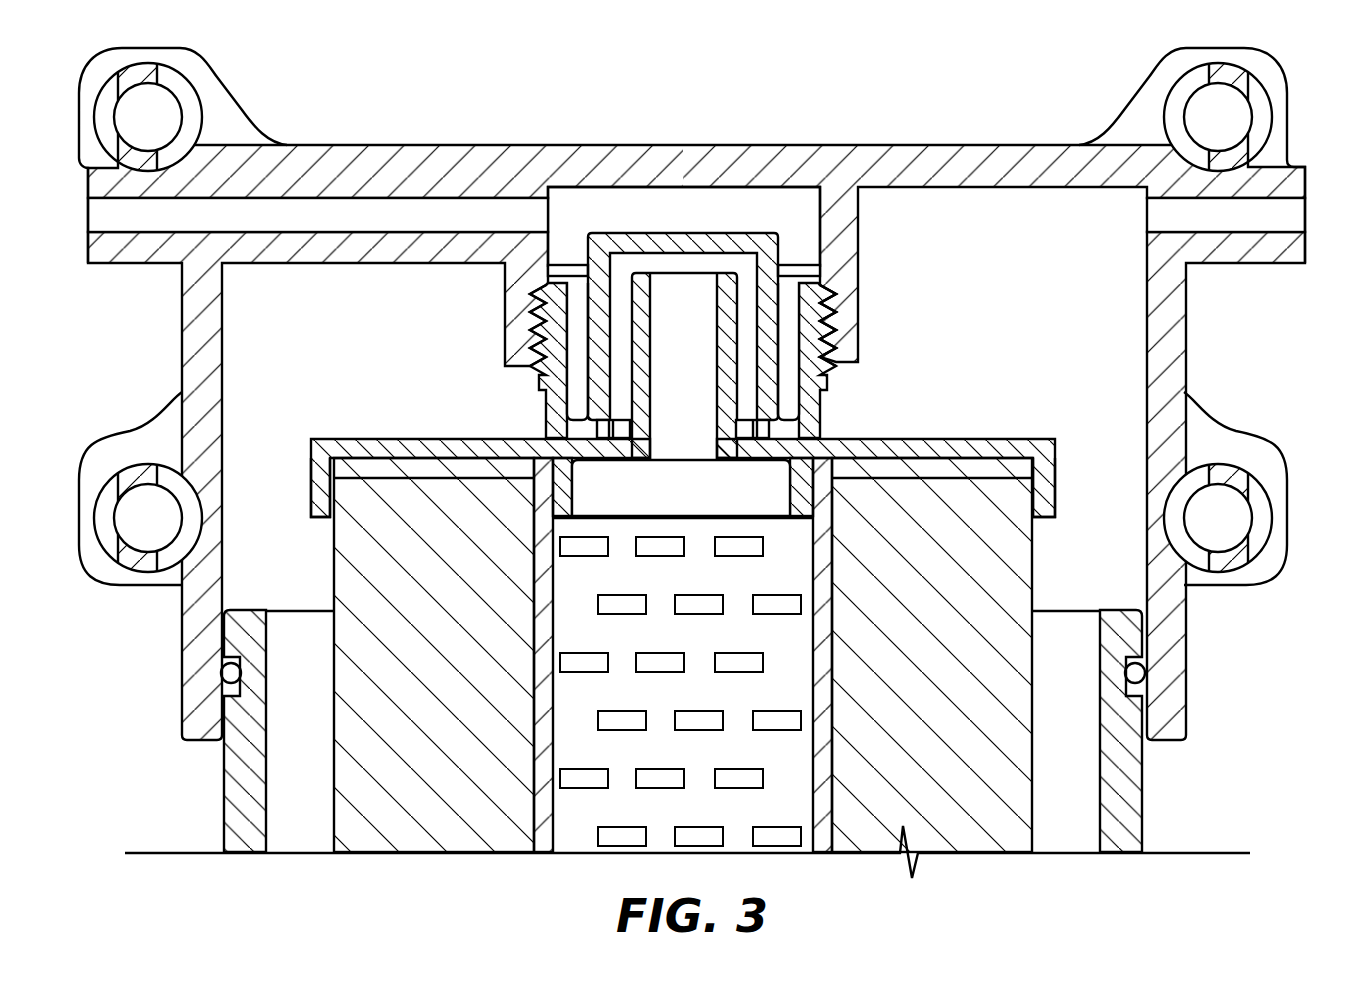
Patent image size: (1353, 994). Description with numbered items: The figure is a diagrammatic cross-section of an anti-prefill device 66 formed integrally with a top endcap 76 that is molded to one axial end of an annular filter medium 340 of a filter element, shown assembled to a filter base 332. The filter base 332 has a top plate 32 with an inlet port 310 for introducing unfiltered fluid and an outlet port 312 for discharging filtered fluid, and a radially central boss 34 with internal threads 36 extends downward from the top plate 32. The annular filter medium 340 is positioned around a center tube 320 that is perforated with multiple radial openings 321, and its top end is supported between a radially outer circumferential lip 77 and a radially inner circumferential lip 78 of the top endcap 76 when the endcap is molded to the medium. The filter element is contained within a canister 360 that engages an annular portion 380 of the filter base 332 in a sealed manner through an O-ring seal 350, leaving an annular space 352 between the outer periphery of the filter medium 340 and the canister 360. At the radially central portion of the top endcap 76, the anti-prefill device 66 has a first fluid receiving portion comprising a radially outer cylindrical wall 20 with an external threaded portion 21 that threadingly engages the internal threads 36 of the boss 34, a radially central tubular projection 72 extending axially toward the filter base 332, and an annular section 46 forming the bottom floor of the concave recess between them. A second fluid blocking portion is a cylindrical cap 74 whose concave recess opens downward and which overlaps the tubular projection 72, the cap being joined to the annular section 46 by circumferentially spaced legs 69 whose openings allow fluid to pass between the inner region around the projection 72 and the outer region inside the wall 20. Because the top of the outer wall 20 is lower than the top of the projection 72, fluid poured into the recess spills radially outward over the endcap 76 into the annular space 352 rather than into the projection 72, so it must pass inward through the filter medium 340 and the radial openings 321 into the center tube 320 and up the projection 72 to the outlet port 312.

The filter base 332 is at (486, 94).
The outlet port 312 is at (322, 208).
The inlet port 310 is at (1256, 206).
The radially outer cylindrical wall 20 is at (556, 288).
The cylindrical cap 74 is at (638, 243).
The anti-prefill device 66 is at (669, 272).
The radially central tubular projection 72 is at (728, 272).
The radially central boss 34 is at (836, 196).
The external threaded portion 21 is at (821, 287).
The internal threads 36 is at (830, 284).
The top plate 32 is at (1003, 153).
The top endcap 76 is at (396, 440).
The circumferentially spaced legs 69 is at (598, 430).
The radially outer circumferential lip 77 is at (333, 500).
The annular section 46 is at (776, 456).
The radially inner circumferential lip 78 is at (814, 503).
The center tube 320 is at (832, 566).
The radial openings 321 is at (783, 603).
The annular filter medium 340 is at (945, 786).
The annular space 352 is at (1054, 650).
The annular portion 380 is at (1170, 600).
The O-ring seal 350 is at (1143, 674).
The canister 360 is at (1126, 768).